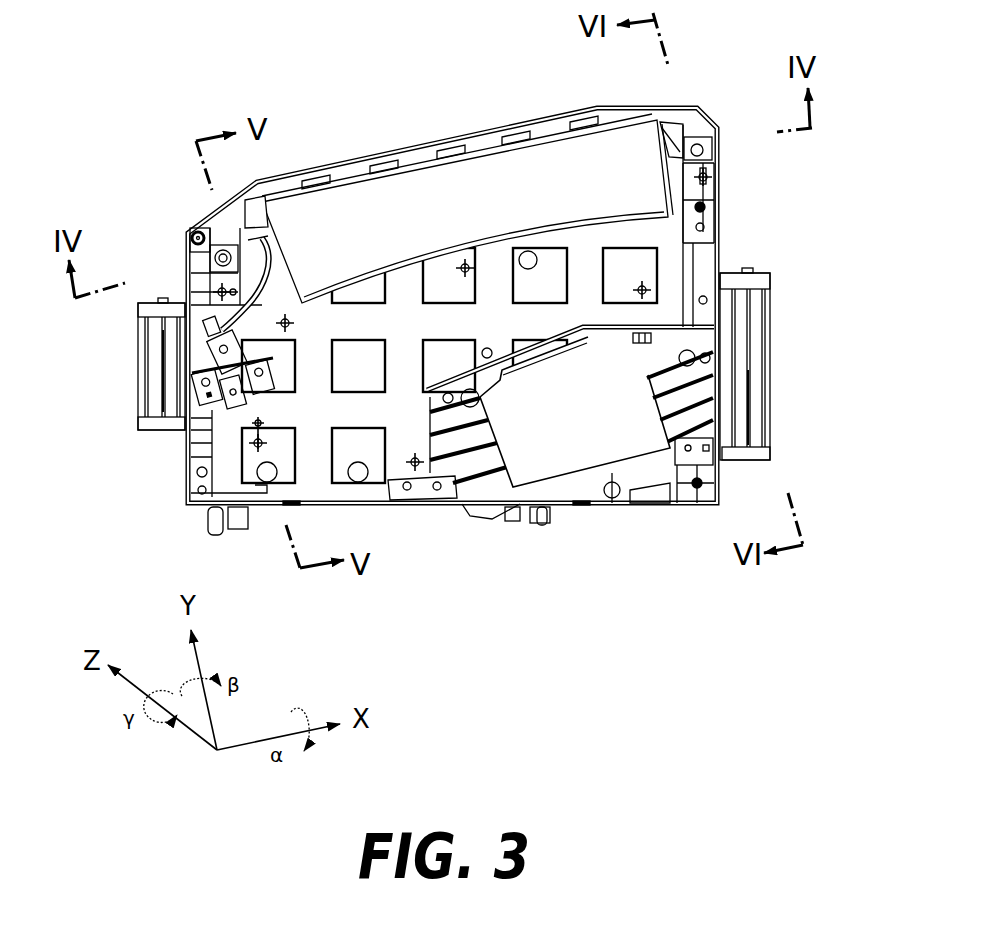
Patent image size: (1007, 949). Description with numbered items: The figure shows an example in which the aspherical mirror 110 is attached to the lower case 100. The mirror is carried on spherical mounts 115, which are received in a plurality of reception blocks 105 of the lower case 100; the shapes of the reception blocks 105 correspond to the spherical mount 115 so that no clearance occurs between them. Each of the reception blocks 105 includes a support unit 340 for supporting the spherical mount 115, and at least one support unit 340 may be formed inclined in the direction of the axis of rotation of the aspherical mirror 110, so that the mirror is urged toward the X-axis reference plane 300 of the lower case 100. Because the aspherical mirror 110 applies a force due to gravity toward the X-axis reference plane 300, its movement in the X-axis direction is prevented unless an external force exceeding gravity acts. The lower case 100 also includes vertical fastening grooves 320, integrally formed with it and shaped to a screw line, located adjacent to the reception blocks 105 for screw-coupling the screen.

The lower case 100 is at (688, 122).
The reception blocks 105 is at (720, 127).
The aspherical mirror 110 is at (417, 168).
The spherical mount 115 is at (716, 168).
The X-axis reference plane 300 is at (190, 262).
The vertical fastening groove 320 is at (717, 183).
The support unit 340 is at (713, 148).